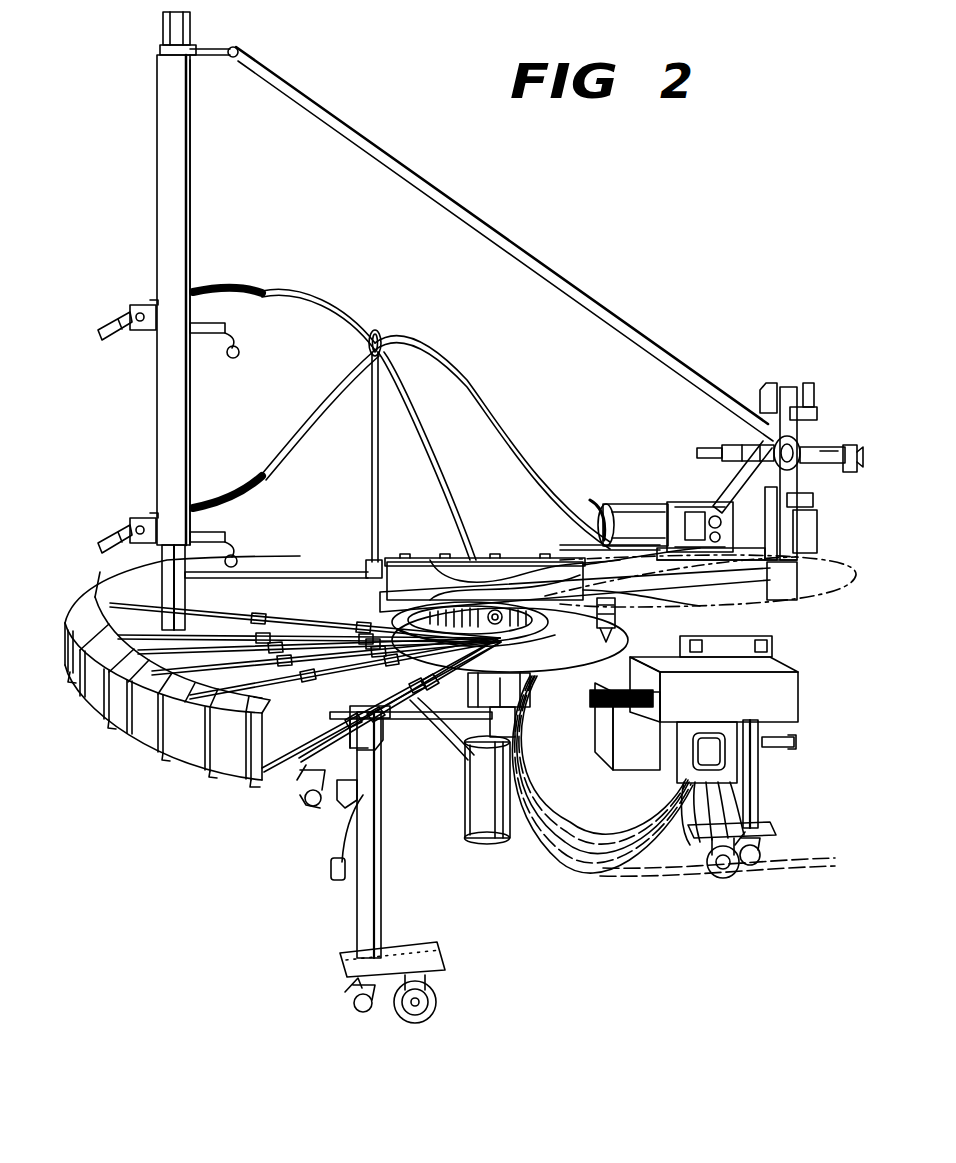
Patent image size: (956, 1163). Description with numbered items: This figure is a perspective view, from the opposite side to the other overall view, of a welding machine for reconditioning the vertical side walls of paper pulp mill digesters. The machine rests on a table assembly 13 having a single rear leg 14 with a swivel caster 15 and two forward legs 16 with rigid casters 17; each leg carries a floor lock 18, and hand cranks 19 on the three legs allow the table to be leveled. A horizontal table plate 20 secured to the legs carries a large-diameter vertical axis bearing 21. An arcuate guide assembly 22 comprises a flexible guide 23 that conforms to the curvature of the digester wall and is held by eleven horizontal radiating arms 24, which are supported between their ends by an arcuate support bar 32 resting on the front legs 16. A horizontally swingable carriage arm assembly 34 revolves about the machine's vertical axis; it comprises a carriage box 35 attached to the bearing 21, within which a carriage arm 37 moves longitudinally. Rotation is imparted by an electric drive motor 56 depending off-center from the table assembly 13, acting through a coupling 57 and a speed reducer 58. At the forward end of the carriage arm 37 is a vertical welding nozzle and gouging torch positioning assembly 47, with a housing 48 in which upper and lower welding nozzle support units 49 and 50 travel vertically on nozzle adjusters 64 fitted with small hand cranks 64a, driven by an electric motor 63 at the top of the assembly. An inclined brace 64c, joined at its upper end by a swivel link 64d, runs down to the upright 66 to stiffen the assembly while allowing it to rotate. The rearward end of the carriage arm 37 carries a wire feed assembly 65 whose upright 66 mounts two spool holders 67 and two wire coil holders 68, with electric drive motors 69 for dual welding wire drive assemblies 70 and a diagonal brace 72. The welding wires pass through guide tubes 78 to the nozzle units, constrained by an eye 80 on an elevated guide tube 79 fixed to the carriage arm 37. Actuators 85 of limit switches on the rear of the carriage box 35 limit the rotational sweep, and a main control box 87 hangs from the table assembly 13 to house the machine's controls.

The table assembly 13 is at (749, 639).
The rear leg 14 is at (762, 812).
The swivel caster 15 is at (718, 886).
The forward legs 16 is at (372, 905).
The rigid casters 17 is at (438, 994).
The floor lock 18 is at (356, 1012).
The hand cranks 19 is at (337, 882).
The table plate 20 is at (532, 690).
The vertical axis bearing 21 is at (548, 640).
The arcuate guide assembly 22 is at (198, 776).
The flexible guide 23 is at (155, 740).
The horizontal radiating arms 24 is at (392, 730).
The arcuate support bar 32 is at (426, 723).
The carriage arm assembly 34 is at (426, 552).
The carriage box 35 is at (502, 566).
The carriage arm 37 is at (285, 575).
The welding nozzle and gouging torch positioning assembly 47 is at (193, 165).
The housing 48 is at (185, 408).
The upper welding nozzle support unit 49 is at (120, 318).
The lower welding nozzle support unit 50 is at (116, 528).
The electric drive motor 56 is at (490, 832).
The coupling 57 is at (464, 770).
The speed reducer 58 is at (516, 718).
The electric motor 63 is at (188, 38).
The nozzle adjusters 64 is at (215, 330).
The hand cranks 64a is at (241, 353).
The inclined brace 64c is at (518, 250).
The swivel link 64d is at (212, 52).
The wire feed assembly 65 is at (790, 377).
The upright 66 is at (786, 548).
The spool holders 67 is at (796, 455).
The wire coil holders 68 is at (762, 416).
The electric drive motors 69 is at (596, 508).
The welding wire drive assemblies 70 is at (670, 496).
The diagonal brace 72 is at (730, 495).
The guide tubes 78 is at (228, 292).
The elevated guide tube 79 is at (372, 507).
The eye 80 is at (382, 341).
The actuators 85 is at (618, 624).
The main control box 87 is at (643, 758).